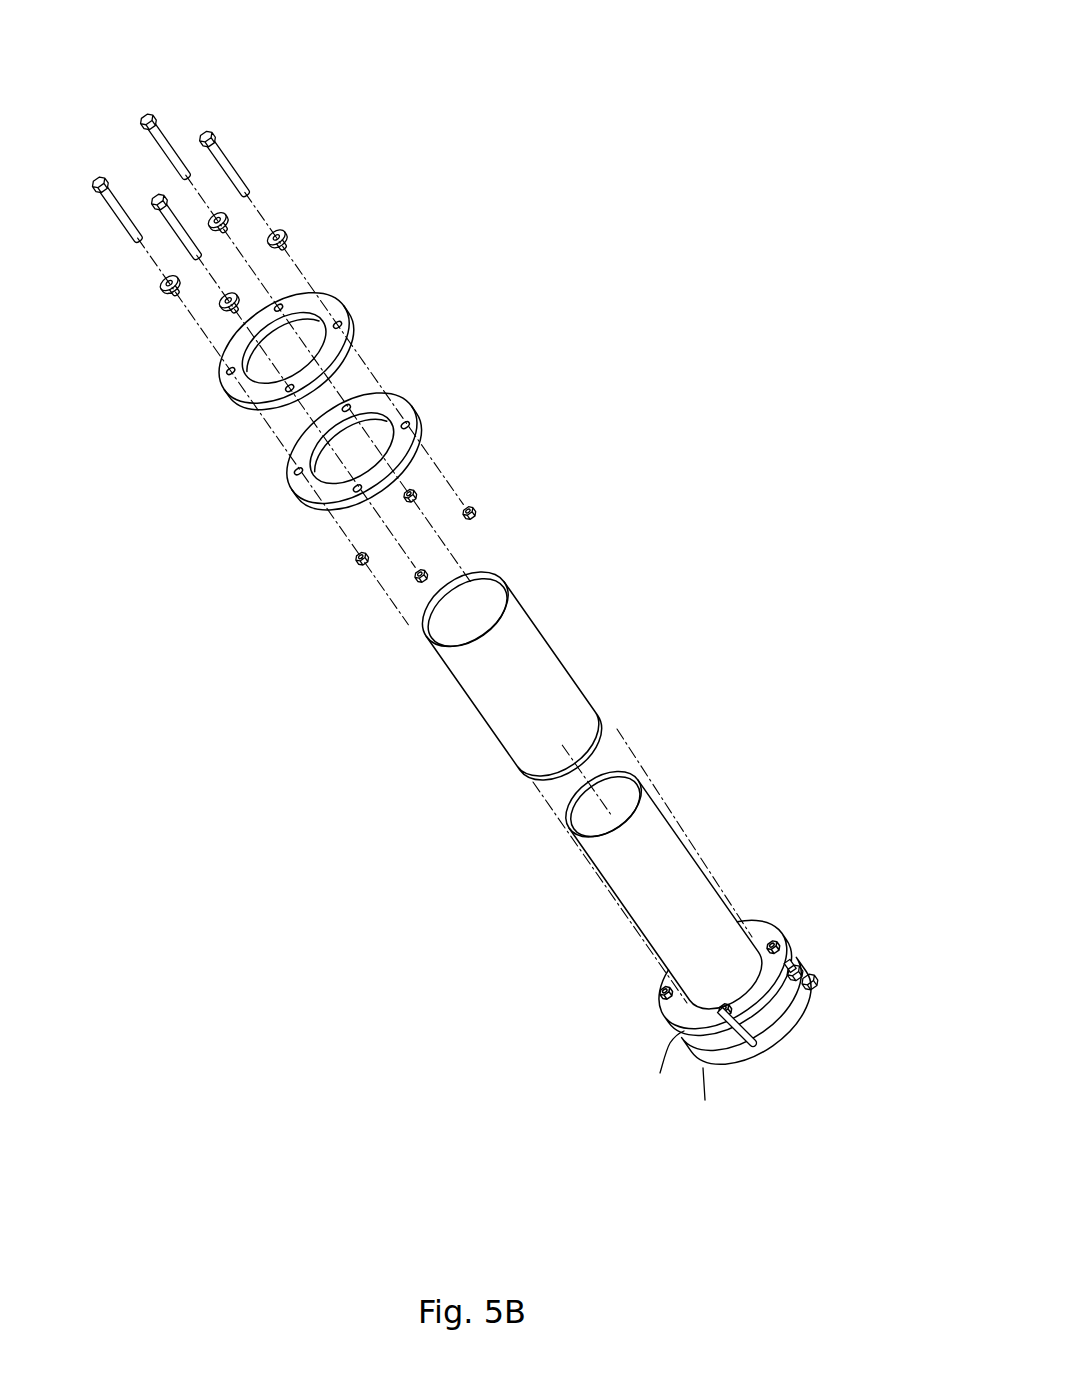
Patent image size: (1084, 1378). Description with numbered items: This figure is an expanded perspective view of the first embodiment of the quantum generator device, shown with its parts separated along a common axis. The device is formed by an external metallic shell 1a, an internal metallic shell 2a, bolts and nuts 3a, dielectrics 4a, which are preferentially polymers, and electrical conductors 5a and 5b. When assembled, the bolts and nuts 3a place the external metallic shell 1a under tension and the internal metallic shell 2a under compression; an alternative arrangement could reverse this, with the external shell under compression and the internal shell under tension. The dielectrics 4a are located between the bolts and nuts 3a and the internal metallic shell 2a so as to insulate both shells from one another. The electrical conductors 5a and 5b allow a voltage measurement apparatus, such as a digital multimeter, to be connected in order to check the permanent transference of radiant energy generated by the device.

The external metallic shell 1a is at (383, 472).
The internal metallic shell 2a is at (325, 358).
The bolts and nuts 3a is at (98, 185).
The dielectrics 4a is at (168, 287).
The electrical conductor 5a is at (657, 1060).
The electrical conductor 5b is at (708, 1070).